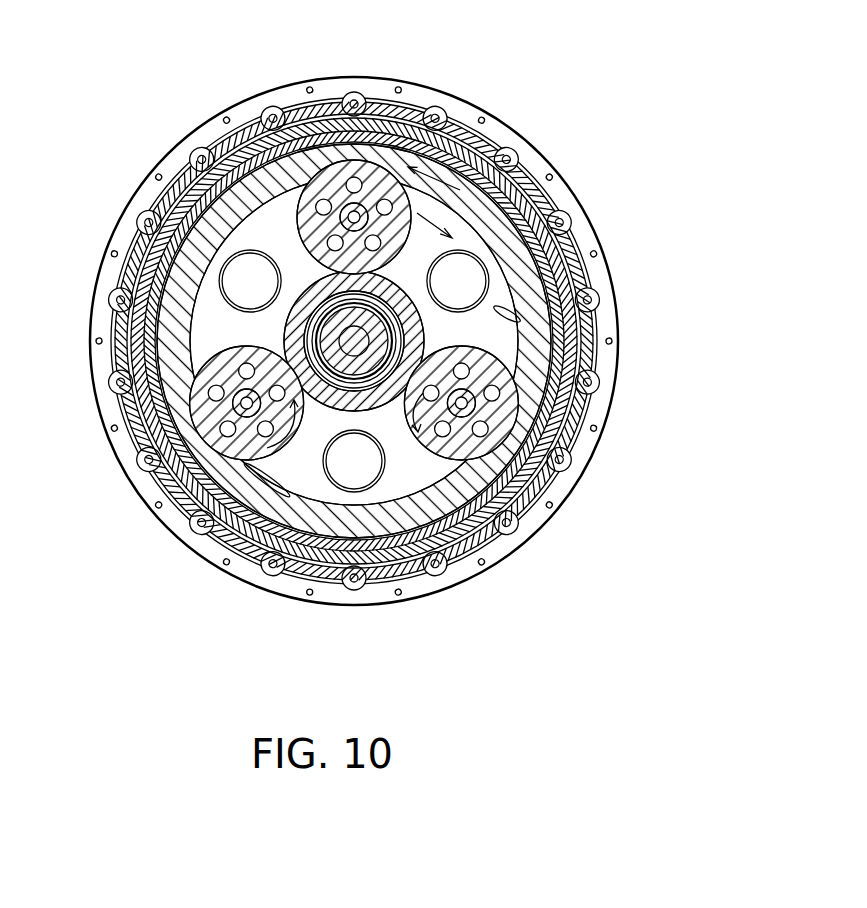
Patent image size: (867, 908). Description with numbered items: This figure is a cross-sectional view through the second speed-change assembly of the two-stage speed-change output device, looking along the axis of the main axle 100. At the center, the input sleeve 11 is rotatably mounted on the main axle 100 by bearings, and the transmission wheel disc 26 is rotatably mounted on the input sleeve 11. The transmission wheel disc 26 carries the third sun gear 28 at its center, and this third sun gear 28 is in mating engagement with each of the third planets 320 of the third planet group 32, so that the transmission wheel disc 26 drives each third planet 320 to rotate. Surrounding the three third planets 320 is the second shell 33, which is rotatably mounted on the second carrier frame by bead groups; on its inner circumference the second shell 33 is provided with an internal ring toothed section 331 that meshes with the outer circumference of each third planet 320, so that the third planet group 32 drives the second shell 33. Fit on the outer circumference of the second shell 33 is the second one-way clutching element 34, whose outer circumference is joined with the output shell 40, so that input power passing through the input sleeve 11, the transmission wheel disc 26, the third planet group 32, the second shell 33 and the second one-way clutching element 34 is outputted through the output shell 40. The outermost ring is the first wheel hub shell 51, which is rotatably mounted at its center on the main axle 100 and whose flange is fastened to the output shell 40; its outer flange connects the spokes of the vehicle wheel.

The input sleeve 11 is at (345, 340).
The transmission wheel disc 26 is at (465, 233).
The third sun gear 28 is at (190, 300).
The third planet group 32 is at (288, 200).
The third planet 320 is at (330, 190).
The second shell 33 is at (538, 395).
The internal ring toothed section 331 is at (517, 328).
The second one-way clutching element 34 is at (510, 473).
The output shell 40 is at (472, 522).
The first wheel hub shell 51 is at (404, 102).
The main axle 100 is at (372, 334).